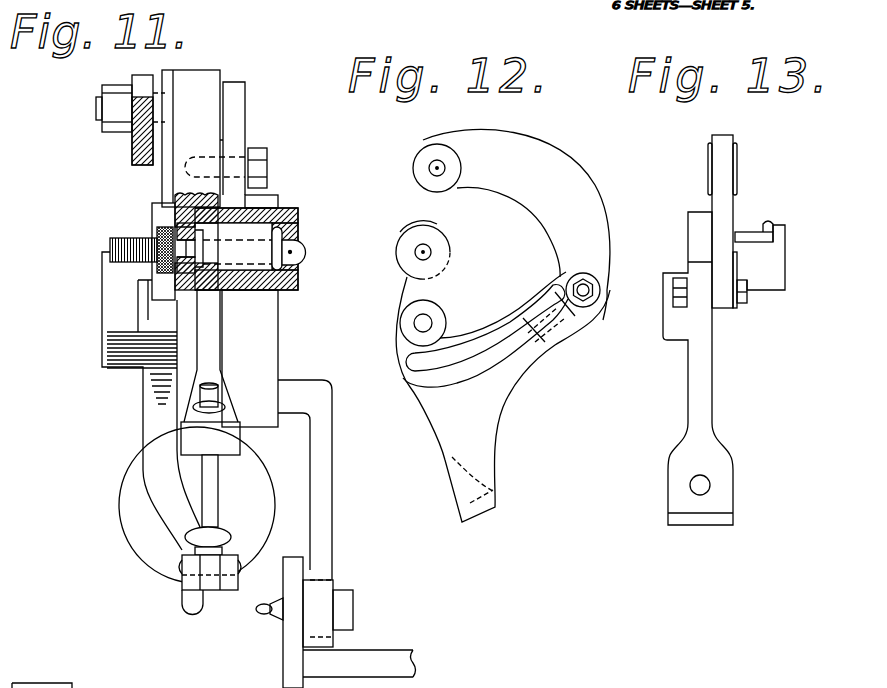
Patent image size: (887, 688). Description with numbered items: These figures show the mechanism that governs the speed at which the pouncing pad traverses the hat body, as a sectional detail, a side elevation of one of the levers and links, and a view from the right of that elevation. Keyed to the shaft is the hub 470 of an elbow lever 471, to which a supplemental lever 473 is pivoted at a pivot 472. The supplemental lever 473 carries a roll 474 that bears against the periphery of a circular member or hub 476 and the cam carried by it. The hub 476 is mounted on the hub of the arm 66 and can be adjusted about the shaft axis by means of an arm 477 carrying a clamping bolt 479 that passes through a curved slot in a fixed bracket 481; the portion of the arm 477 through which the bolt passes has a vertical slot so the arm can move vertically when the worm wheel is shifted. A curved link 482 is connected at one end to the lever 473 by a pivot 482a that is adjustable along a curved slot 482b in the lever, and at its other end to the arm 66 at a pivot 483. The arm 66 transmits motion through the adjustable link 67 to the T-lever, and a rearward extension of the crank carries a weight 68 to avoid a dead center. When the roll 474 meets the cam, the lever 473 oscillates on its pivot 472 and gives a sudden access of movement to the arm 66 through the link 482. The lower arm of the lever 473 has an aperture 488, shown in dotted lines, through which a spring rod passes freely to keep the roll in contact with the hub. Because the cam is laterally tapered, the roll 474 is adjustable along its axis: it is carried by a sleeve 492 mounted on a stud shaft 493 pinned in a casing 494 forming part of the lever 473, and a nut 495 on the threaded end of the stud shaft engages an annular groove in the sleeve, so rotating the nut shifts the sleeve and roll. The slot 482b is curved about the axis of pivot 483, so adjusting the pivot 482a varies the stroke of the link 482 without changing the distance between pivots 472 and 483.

In FIG. 11, the arm 66 is at (205, 76).
In FIG. 11, the link 67 is at (140, 80).
In FIG. 11, the weight 68 is at (132, 512).
In FIG. 11, the hub 470 is at (162, 213).
In FIG. 11, the elbow lever 471 is at (185, 572).
In FIG. 12, the pivot 472 is at (414, 323).
In FIG. 11, the supplemental lever 473 is at (207, 328).
In FIG. 12, the supplemental lever 473 is at (473, 420).
In FIG. 13, the supplemental lever 473 is at (703, 390).
In FIG. 11, the roll 474 is at (298, 224).
In FIG. 12, the roll 474 is at (437, 227).
In FIG. 13, the roll 474 is at (768, 227).
In FIG. 11, the hub 476 is at (280, 196).
In FIG. 11, the arm 477 is at (322, 548).
In FIG. 11, the clamping bolt 479 is at (275, 610).
In FIG. 11, the fixed bracket 481 is at (293, 650).
In FIG. 12, the curved link 482 is at (585, 162).
In FIG. 13, the curved link 482 is at (722, 190).
In FIG. 12, the pivot 482a is at (578, 350).
In FIG. 12, the curved slot 482b is at (500, 352).
In FIG. 12, the pivot 483 is at (437, 165).
In FIG. 12, the aperture 488 is at (497, 487).
In FIG. 13, the aperture 488 is at (700, 484).
In FIG. 11, the sleeve 492 is at (247, 240).
In FIG. 11, the stud shaft 493 is at (303, 248).
In FIG. 11, the casing 494 is at (300, 282).
In FIG. 13, the casing 494 is at (768, 265).
In FIG. 11, the nut 495 is at (157, 270).